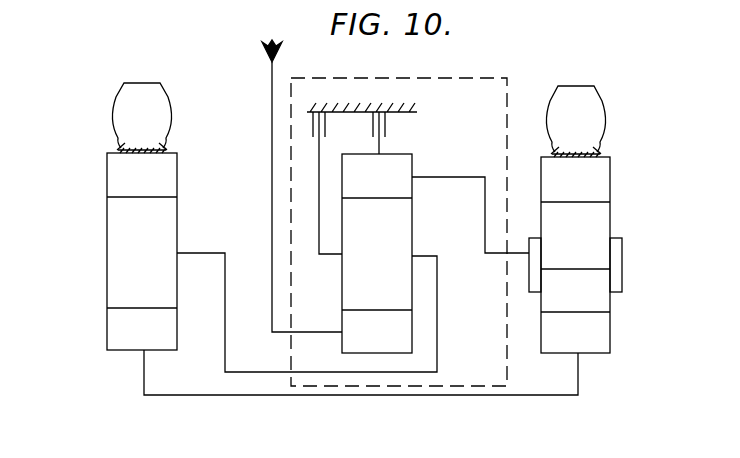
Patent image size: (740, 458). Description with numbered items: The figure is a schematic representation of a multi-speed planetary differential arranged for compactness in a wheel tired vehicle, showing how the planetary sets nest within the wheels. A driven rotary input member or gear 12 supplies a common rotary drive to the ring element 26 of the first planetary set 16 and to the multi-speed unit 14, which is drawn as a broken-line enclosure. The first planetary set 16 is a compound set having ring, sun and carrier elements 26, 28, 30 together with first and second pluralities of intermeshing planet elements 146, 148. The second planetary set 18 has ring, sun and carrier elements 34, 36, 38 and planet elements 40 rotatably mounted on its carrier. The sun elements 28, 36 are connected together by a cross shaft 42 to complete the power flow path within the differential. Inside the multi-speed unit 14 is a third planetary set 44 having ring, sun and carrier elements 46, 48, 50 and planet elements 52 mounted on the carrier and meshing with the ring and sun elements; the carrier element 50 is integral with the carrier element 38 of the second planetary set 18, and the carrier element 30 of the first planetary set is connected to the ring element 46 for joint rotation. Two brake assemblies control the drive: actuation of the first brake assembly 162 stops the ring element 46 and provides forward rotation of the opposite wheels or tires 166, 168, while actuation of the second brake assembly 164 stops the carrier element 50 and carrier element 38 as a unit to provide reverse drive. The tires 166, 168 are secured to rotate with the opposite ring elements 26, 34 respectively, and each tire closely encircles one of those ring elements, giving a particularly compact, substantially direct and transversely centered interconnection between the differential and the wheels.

The driven rotary input member or gear 12 is at (272, 188).
The multi-speed unit 14 is at (432, 76).
The first planetary set 16 is at (598, 357).
The second planetary set 18 is at (113, 355).
The ring element of the first planetary set 26 is at (584, 194).
The sun element of the first planetary set 28 is at (584, 345).
The carrier element of the first planetary set 30 is at (518, 253).
The ring element of the second planetary set 34 is at (155, 189).
The sun element of the second planetary set 36 is at (155, 342).
The carrier element of the second planetary set 38 is at (198, 252).
The planet elements of the second planetary set 40 is at (155, 266).
The cross shaft 42 is at (160, 395).
The third planetary set 44 is at (416, 152).
The ring element of the third planetary set 46 is at (390, 192).
The sun element of the third planetary set 48 is at (390, 344).
The carrier element of the third planetary set 50 is at (421, 256).
The planet elements of the third planetary set 52 is at (390, 266).
The first plurality of planet elements 146 is at (594, 250).
The second plurality of planet elements 148 is at (594, 305).
The first brake assembly 162 is at (388, 128).
The second brake assembly 164 is at (310, 125).
The vehicle wheel or tire 166 is at (600, 95).
The vehicle wheel or tire 168 is at (118, 124).